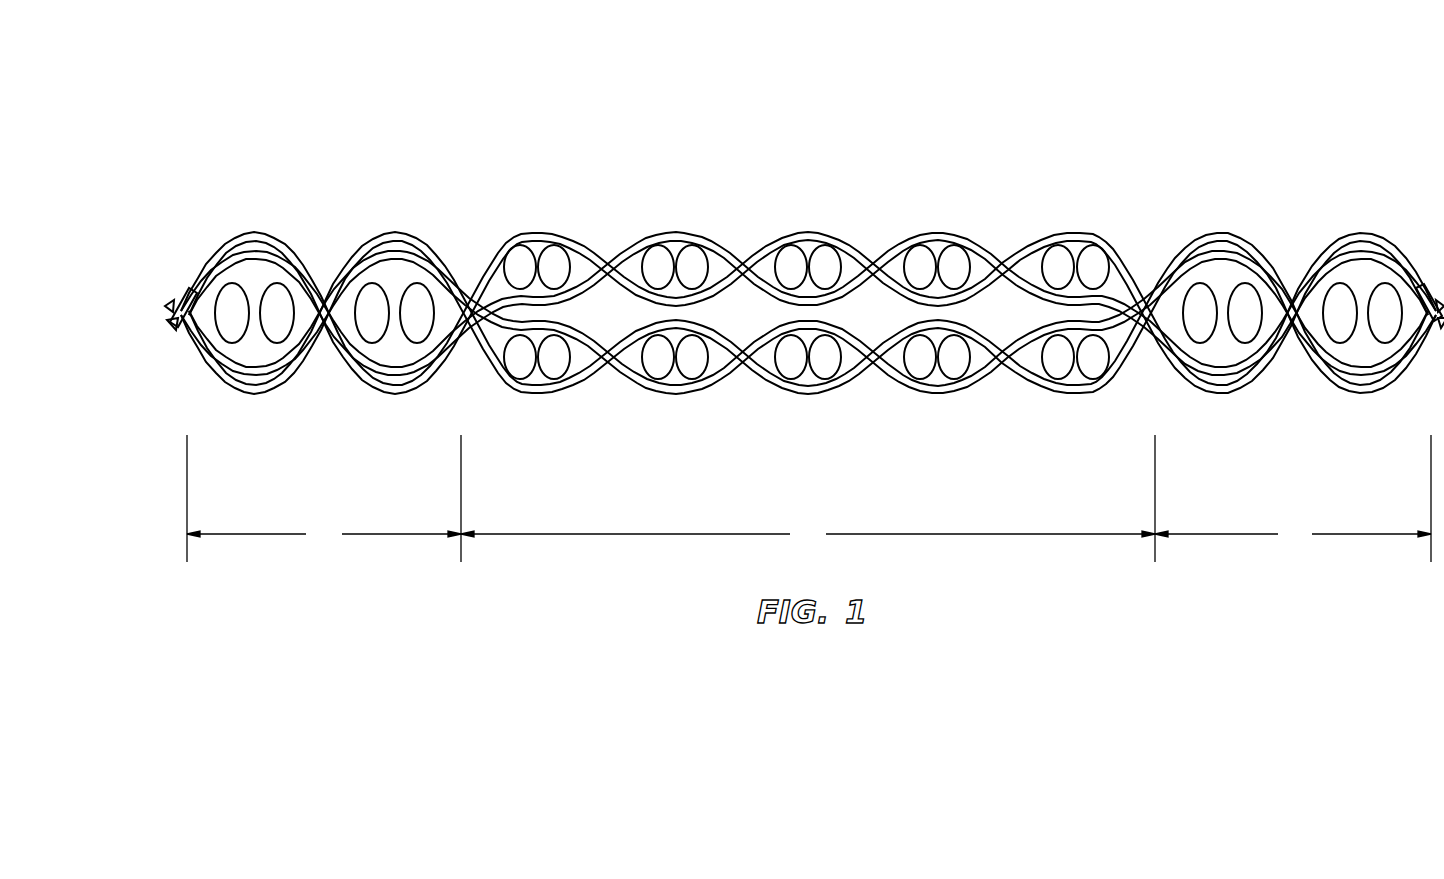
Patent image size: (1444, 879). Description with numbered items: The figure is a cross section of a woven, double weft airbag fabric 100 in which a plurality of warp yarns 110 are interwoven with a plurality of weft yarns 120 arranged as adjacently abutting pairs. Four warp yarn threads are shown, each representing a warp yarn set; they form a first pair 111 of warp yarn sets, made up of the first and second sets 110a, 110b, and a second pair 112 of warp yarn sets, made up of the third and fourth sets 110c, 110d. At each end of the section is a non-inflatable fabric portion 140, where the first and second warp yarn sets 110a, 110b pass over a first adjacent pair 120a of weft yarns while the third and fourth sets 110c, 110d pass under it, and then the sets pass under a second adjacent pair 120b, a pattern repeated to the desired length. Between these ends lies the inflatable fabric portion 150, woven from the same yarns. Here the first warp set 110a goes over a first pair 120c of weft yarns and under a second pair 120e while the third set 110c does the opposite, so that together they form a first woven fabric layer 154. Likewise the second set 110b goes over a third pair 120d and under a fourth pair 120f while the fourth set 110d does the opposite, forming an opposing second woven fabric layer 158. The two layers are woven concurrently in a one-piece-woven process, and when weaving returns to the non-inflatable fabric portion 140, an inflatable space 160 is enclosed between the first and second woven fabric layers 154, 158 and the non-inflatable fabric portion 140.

The airbag fabric 100 is at (788, 247).
The warp yarns 110 is at (808, 301).
The first set of warp yarns 110a is at (255, 230).
The second set of warp yarns 110b is at (270, 247).
The third set of warp yarns 110c is at (259, 392).
The fourth set of warp yarns 110d is at (280, 391).
The first pair of warp yarn sets 111 is at (317, 158).
The second pair of warp yarn sets 112 is at (350, 408).
The weft yarns 120 is at (1230, 290).
The first adjacent pair of weft yarns 120a is at (264, 303).
The second adjacent pair of weft yarns 120b is at (375, 318).
The first adjacent pair of weft yarns of the inflatable portion 120c is at (527, 262).
The third adjacent pair of weft yarns 120d is at (526, 364).
The second adjacent pair of weft yarns of the inflatable portion 120e is at (695, 264).
The fourth adjacent pair of weft yarns 120f is at (693, 365).
The non-inflatable fabric portion 140 is at (809, 498).
The inflatable fabric portion 150 is at (808, 536).
The first woven fabric layer 154 is at (755, 212).
The second woven fabric layer 158 is at (782, 443).
The inflatable space 160 is at (889, 327).